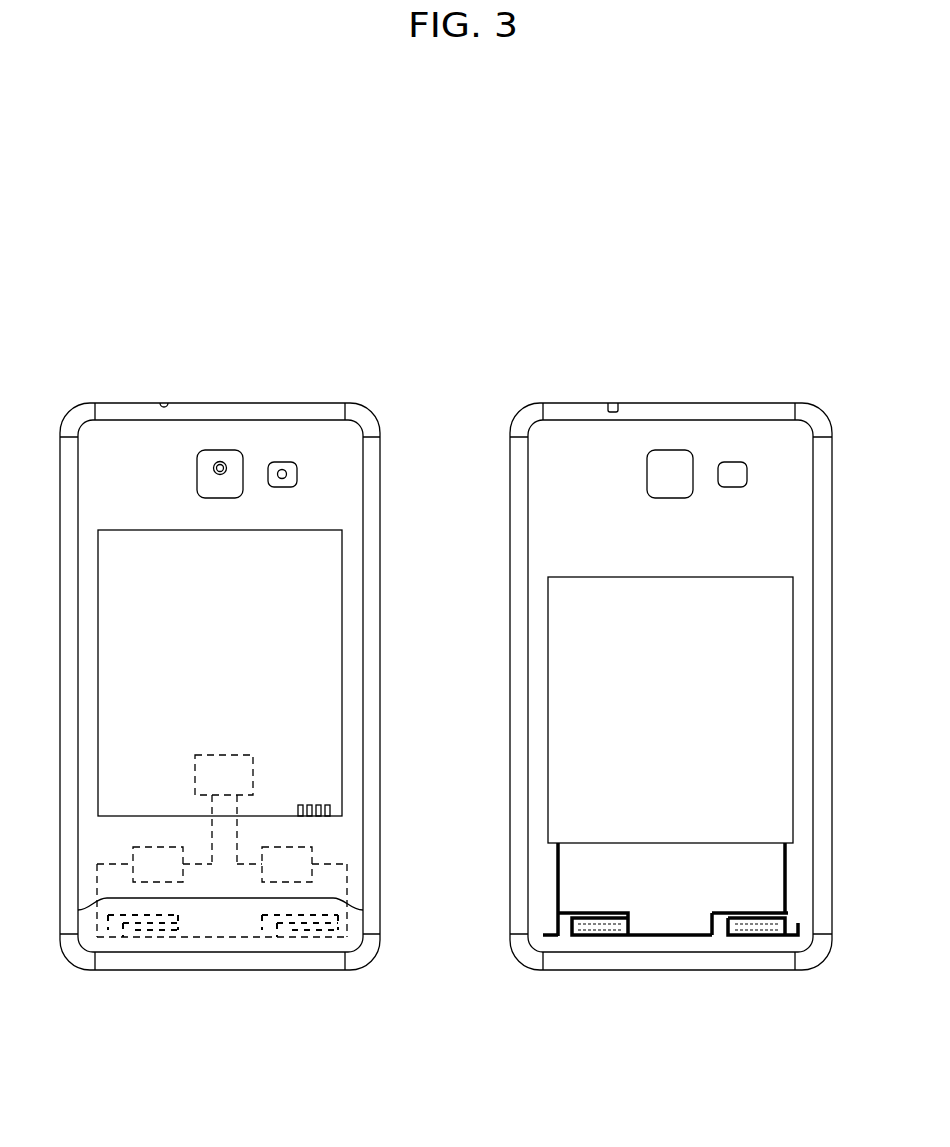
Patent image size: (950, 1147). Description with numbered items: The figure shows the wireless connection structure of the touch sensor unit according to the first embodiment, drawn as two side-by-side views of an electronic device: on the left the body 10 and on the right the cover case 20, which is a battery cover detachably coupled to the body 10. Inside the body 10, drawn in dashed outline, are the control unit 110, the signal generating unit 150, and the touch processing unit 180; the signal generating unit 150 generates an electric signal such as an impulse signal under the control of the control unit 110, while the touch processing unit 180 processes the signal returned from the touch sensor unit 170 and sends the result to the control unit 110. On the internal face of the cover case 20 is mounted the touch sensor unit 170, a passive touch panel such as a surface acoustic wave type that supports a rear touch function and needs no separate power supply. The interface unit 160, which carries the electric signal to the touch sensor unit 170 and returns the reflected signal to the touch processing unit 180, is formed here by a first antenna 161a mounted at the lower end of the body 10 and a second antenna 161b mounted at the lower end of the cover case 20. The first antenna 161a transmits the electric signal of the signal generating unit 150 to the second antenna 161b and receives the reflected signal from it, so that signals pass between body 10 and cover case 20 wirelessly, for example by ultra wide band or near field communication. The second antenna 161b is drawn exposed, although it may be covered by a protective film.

The body 10 is at (233, 402).
The cover case 20 is at (661, 402).
The control unit 110 is at (195, 772).
The signal generating unit 150 is at (133, 851).
The interface unit 160 is at (495, 940).
The first antenna 161a is at (337, 920).
The second antenna 161b is at (547, 927).
The touch sensor unit 170 is at (787, 725).
The touch processing unit 180 is at (312, 850).